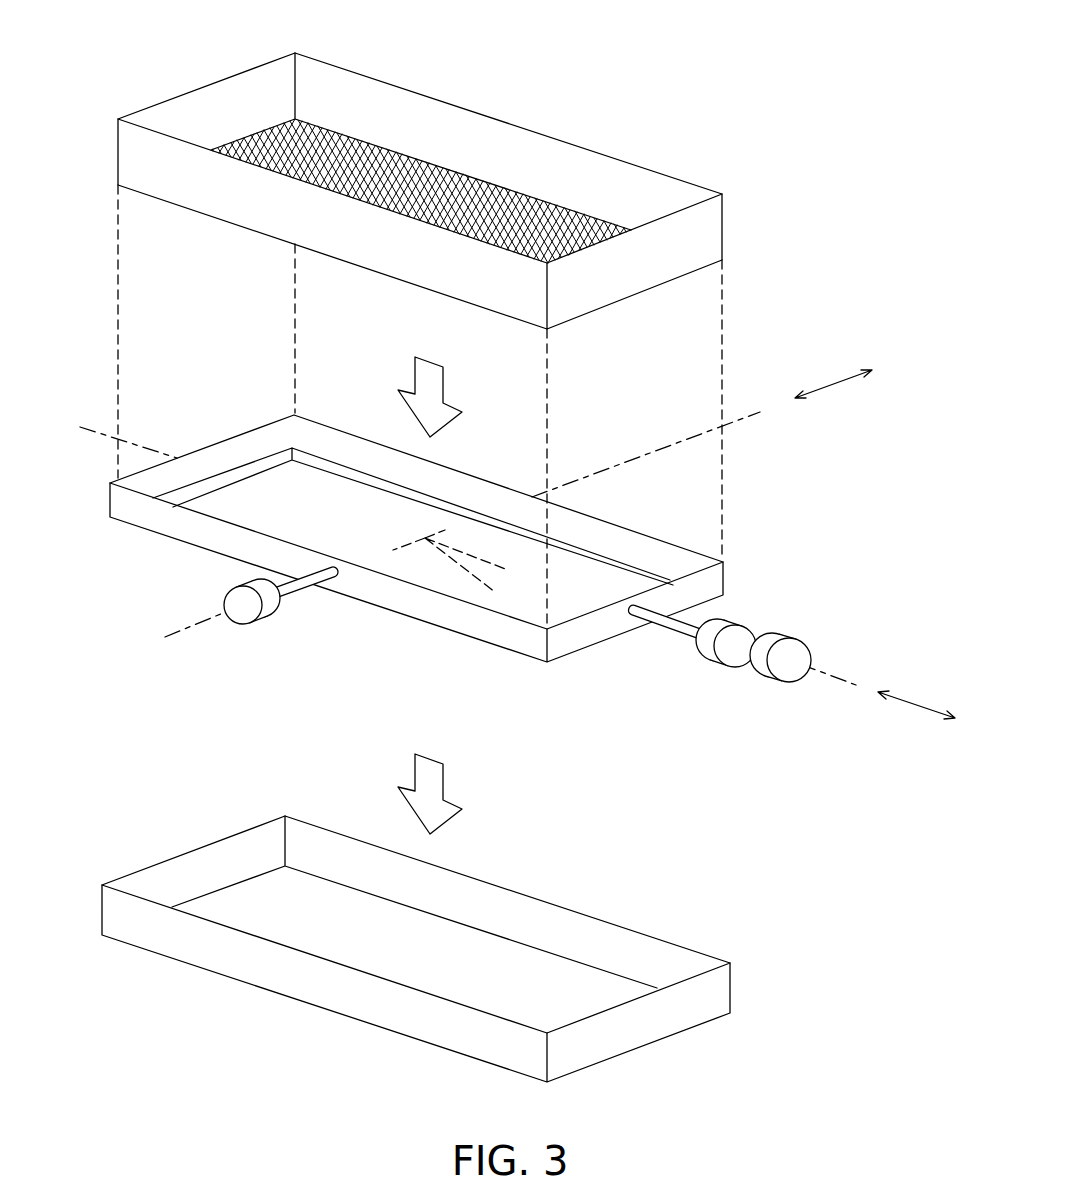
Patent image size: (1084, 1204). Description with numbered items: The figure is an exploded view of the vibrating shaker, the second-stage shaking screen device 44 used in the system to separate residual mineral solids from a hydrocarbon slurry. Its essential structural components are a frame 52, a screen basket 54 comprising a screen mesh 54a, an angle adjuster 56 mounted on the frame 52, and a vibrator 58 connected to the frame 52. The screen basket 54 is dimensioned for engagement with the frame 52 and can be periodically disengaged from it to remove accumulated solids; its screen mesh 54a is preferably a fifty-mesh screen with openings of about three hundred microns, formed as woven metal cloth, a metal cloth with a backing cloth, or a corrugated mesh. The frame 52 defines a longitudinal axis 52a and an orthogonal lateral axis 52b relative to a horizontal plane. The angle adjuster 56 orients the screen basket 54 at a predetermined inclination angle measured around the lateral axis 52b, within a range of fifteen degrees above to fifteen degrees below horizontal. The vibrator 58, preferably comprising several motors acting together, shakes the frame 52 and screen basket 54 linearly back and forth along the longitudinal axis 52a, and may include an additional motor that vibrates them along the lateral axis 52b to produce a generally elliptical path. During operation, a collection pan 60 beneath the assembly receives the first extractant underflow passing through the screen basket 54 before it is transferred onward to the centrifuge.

The shaking screen device 44 is at (667, 88).
The screen basket 54 is at (205, 85).
The screen mesh 54a is at (447, 167).
The frame 52 is at (138, 525).
The longitudinal axis 52a is at (83, 430).
The lateral axis 52b is at (183, 630).
The angle adjuster 56 is at (268, 618).
The vibrator 58 is at (710, 655).
The collection pan 60 is at (220, 975).